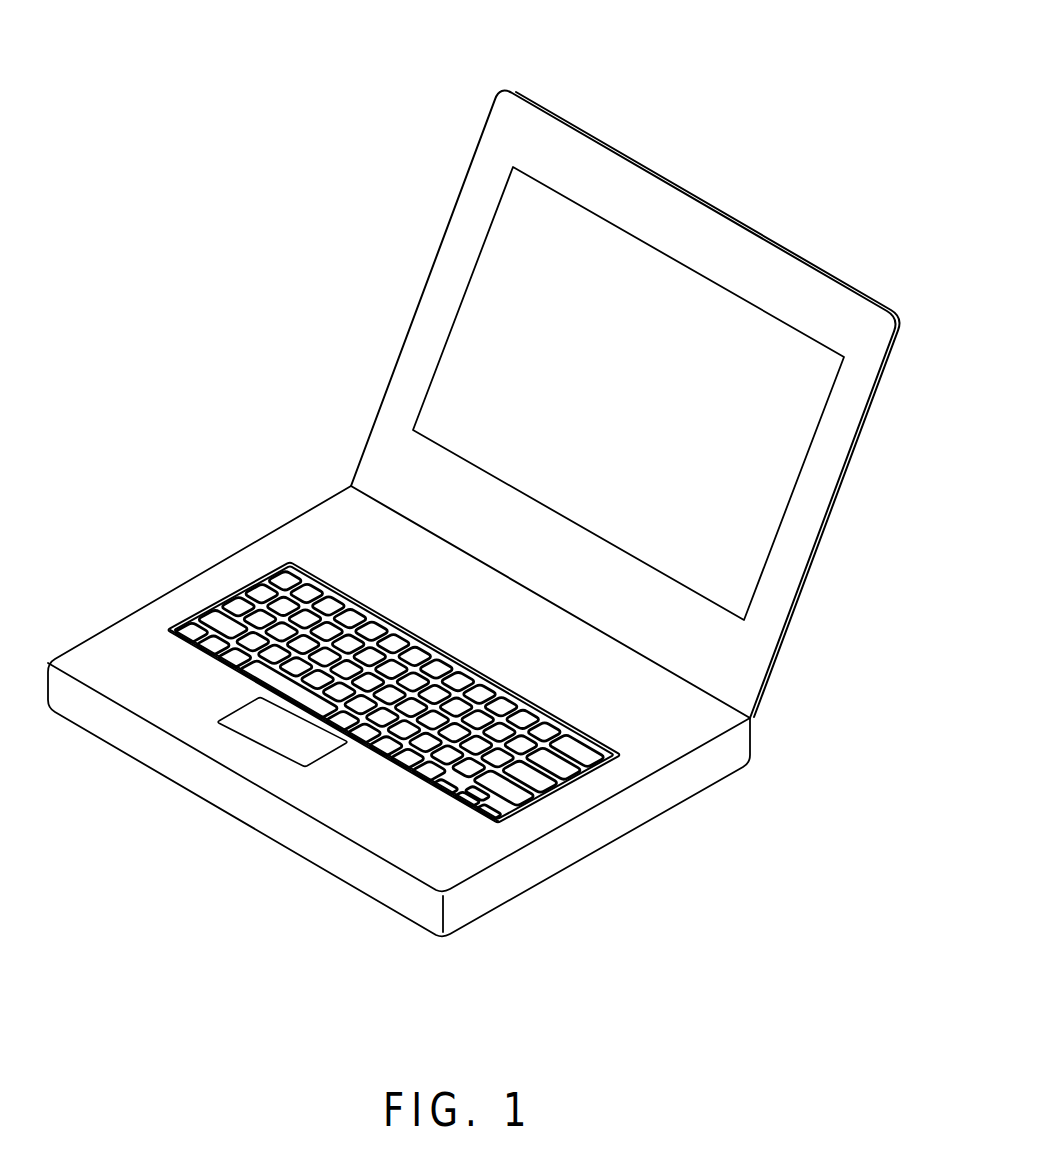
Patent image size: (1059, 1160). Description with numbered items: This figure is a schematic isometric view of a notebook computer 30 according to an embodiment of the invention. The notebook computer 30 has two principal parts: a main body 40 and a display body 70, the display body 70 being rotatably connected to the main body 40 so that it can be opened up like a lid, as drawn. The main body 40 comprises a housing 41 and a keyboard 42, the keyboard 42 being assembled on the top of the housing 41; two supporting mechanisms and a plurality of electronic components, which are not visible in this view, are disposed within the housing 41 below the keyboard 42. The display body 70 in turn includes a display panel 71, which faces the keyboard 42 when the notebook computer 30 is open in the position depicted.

The notebook computer 30 is at (658, 108).
The main body 40 is at (168, 583).
The housing 41 is at (570, 845).
The keyboard 42 is at (238, 603).
The display body 70 is at (433, 326).
The display panel 71 is at (505, 260).